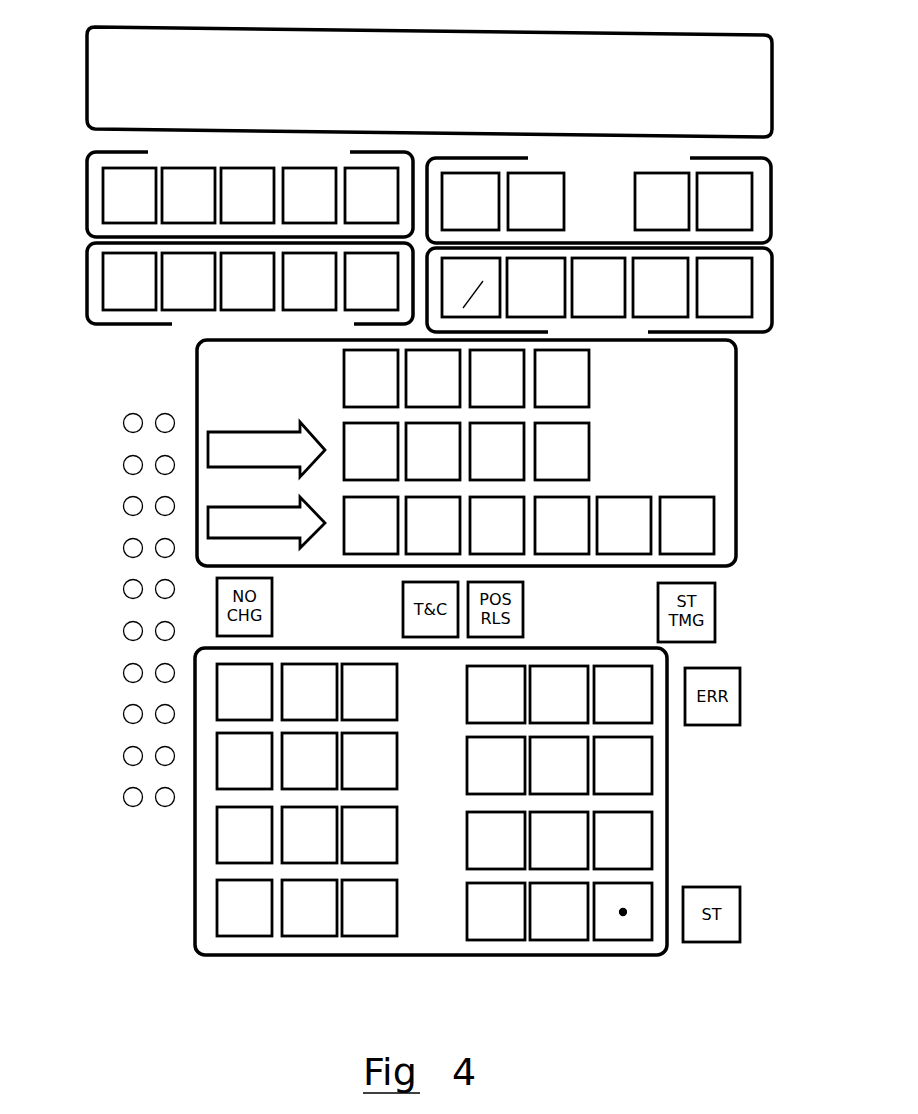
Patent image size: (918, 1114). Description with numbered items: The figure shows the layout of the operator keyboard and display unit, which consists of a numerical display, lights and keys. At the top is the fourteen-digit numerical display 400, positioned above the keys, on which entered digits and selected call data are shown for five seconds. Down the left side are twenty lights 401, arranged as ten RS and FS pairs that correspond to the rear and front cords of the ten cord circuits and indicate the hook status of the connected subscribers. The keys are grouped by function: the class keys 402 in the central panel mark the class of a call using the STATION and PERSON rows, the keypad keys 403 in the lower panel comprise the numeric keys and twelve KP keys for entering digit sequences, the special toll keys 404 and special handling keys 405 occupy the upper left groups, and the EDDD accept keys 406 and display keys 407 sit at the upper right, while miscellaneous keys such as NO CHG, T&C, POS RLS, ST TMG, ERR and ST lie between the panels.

The 14 digit numerical display 400 is at (707, 33).
The lights 401 is at (180, 818).
The class keys 402 is at (736, 437).
The keypad keys 403 is at (668, 803).
The special toll keys 404 is at (122, 320).
The special handling keys 405 is at (122, 154).
The EDDD accept keys 406 is at (740, 163).
The display keys 407 is at (742, 333).